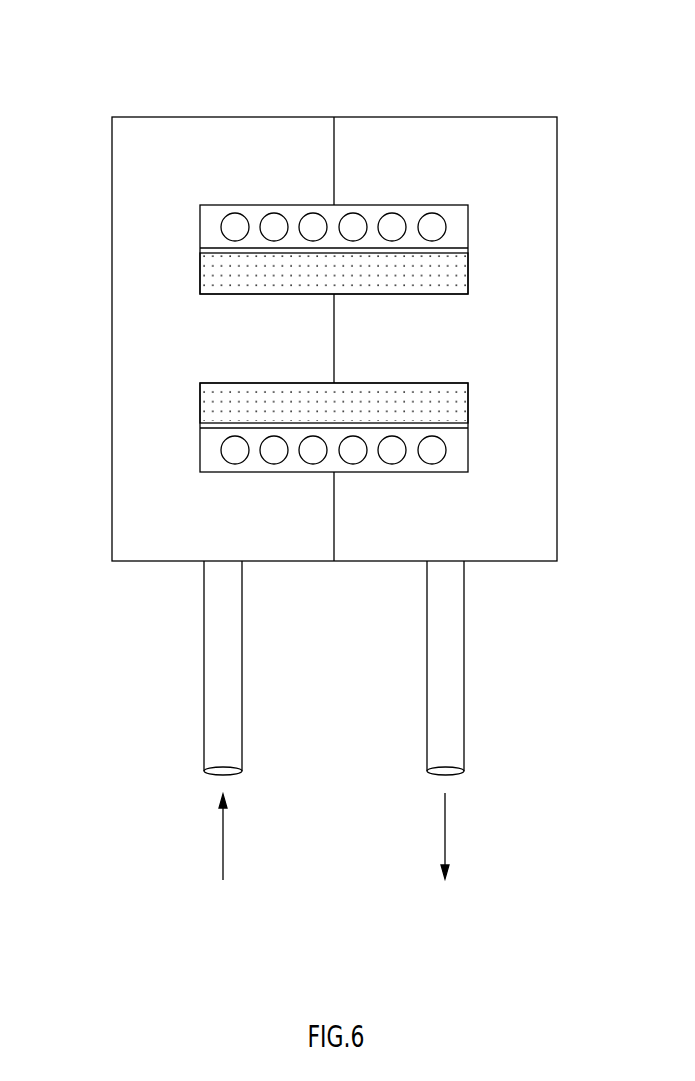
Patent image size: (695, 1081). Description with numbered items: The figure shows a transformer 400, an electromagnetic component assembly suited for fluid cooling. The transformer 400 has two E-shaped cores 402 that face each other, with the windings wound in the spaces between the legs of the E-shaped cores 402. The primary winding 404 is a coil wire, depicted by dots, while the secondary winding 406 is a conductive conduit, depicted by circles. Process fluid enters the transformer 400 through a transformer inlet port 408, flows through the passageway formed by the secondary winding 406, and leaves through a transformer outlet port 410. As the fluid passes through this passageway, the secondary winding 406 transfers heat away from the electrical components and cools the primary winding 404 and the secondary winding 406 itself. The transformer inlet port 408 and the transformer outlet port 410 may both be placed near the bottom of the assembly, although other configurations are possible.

The transformer 400 is at (172, 93).
The E-shaped cores 402 is at (310, 117).
The primary winding 404 is at (417, 281).
The secondary winding 406 is at (220, 450).
The transformer inlet port 408 is at (223, 853).
The transformer outlet port 410 is at (445, 845).